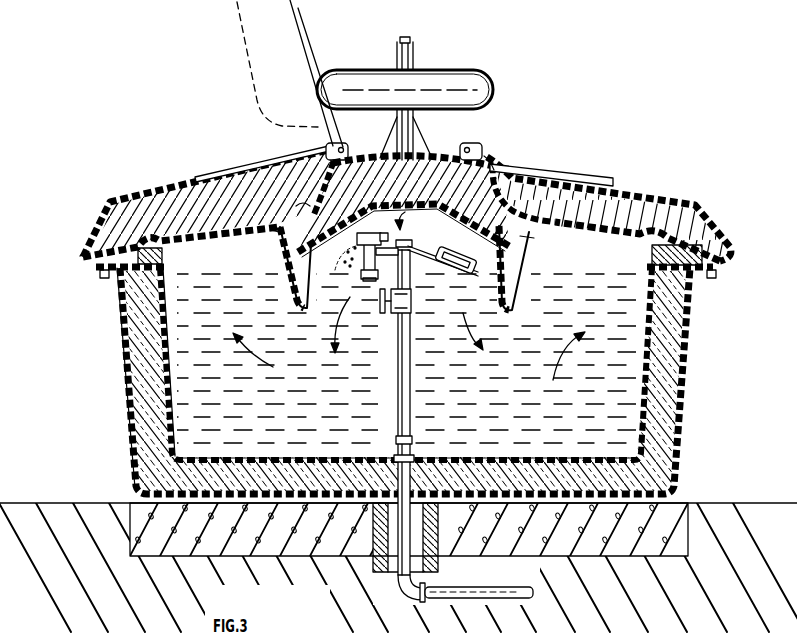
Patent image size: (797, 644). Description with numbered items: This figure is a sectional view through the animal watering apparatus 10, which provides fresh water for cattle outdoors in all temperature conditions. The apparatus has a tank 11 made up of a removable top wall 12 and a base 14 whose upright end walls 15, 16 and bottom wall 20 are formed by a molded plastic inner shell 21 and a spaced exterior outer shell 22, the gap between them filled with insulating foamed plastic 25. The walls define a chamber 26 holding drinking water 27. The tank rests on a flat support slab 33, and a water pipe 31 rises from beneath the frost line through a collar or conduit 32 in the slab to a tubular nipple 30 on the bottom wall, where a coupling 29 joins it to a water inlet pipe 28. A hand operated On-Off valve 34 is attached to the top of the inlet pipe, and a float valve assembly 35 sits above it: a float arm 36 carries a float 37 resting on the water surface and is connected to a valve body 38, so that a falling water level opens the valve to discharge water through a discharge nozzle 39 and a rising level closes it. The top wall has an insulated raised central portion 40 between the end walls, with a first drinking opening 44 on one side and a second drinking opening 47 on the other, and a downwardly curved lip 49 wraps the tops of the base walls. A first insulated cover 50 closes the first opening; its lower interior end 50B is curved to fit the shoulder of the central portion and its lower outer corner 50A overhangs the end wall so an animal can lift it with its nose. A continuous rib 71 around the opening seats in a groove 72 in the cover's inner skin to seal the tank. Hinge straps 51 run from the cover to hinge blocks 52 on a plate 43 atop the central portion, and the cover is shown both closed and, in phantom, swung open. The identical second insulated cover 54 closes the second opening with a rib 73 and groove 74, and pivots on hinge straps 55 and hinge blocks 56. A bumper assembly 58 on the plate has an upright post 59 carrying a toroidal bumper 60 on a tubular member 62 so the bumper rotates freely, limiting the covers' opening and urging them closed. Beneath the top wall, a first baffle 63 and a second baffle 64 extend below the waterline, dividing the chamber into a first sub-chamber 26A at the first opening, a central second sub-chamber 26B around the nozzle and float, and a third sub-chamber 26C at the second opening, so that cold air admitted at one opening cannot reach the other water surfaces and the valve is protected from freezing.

The animal watering apparatus 10 is at (733, 191).
The tank 11 is at (114, 393).
The top wall 12 is at (473, 130).
The base 14 is at (414, 328).
The end wall 15 is at (133, 435).
The end wall 16 is at (690, 332).
The bottom wall 20 is at (312, 458).
The inner shell 21 is at (167, 372).
The outer shell 22 is at (122, 342).
The foamed plastic 25 is at (145, 333).
The chamber 26 is at (322, 383).
The first sub-chamber 26A is at (244, 275).
The second sub-chamber 26B is at (486, 292).
The third sub-chamber 26C is at (621, 275).
The drinking water 27 is at (167, 187).
The water inlet pipe 28 is at (411, 385).
The coupling 29 is at (412, 436).
The tubular nipple 30 is at (413, 458).
The water pipe 31 is at (503, 599).
The collar or conduit 32 is at (437, 530).
The support slab 33 is at (667, 530).
The hand operated On-Off valve 34 is at (398, 313).
The float valve assembly 35 is at (417, 224).
The float arm 36 is at (426, 268).
The float 37 is at (478, 257).
The valve body 38 is at (368, 236).
The discharge nozzle 39 is at (358, 260).
The raised central portion 40 is at (440, 190).
The plate 43 is at (490, 155).
The first drinking opening 44 is at (187, 266).
The second drinking opening 47 is at (592, 248).
The downwardly curved lip 49 is at (108, 274).
The first insulated cover 50 is at (175, 180).
The lower outer corner 50A is at (83, 255).
The lower interior end 50B is at (292, 204).
The hinge straps 51 is at (264, 162).
The hinge blocks 52 is at (347, 156).
The second insulated cover 54 is at (607, 225).
The hinge straps 55 is at (548, 162).
The hinge blocks 56 is at (468, 152).
The bumper assembly 58 is at (486, 60).
The post 59 is at (407, 38).
The toroidal bumper 60 is at (360, 70).
The tubular member 62 is at (415, 55).
The first baffle 63 is at (300, 292).
The second baffle 64 is at (512, 292).
The rib 71 is at (277, 238).
The groove 72 is at (152, 234).
The rib 73 is at (533, 240).
The groove 74 is at (547, 212).